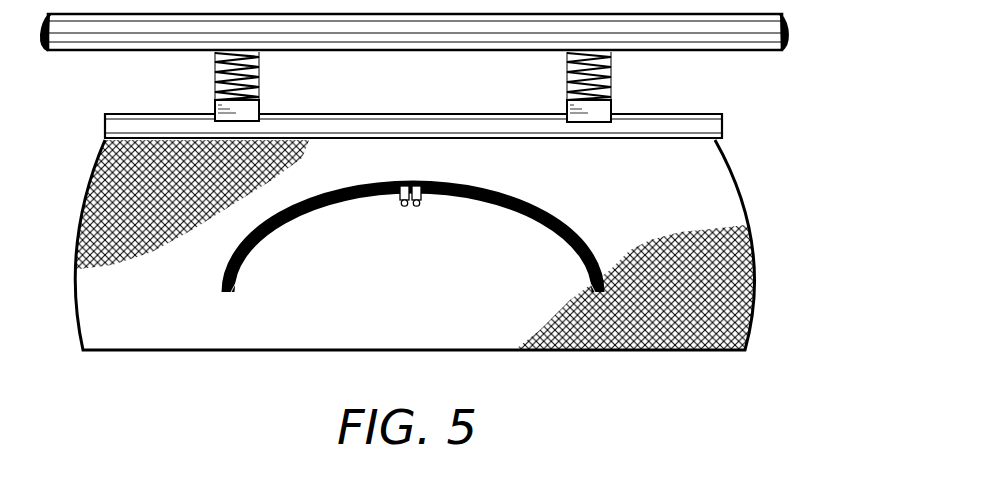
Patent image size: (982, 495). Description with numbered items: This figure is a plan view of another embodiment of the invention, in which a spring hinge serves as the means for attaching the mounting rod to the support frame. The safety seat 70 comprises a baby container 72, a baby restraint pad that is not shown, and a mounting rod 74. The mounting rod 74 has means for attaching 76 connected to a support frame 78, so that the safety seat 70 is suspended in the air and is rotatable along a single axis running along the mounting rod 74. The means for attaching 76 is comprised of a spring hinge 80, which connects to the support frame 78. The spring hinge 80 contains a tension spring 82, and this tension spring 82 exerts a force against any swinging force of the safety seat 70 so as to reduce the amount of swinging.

The safety seat 70 is at (470, 183).
The baby container 72 is at (750, 292).
The mounting rod 74 is at (722, 128).
The means for attaching 76 is at (247, 113).
The support frame 78 is at (718, 45).
The spring hinge 80 is at (567, 78).
The tension spring 82 is at (612, 92).